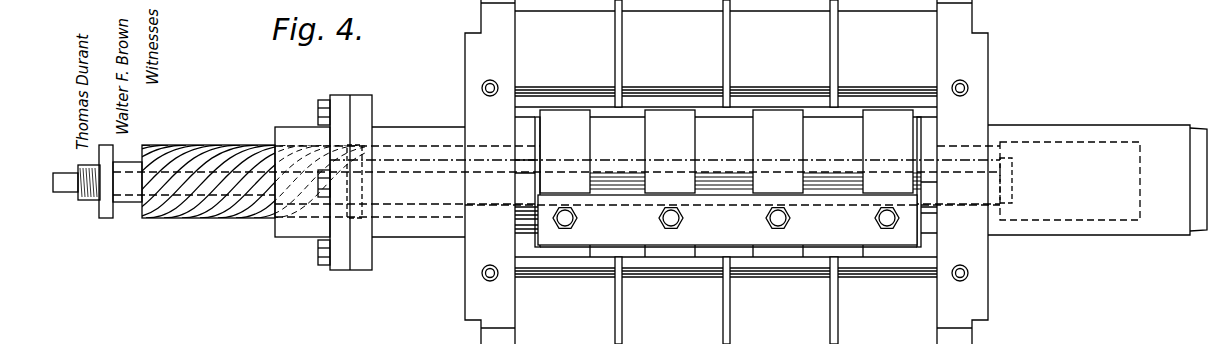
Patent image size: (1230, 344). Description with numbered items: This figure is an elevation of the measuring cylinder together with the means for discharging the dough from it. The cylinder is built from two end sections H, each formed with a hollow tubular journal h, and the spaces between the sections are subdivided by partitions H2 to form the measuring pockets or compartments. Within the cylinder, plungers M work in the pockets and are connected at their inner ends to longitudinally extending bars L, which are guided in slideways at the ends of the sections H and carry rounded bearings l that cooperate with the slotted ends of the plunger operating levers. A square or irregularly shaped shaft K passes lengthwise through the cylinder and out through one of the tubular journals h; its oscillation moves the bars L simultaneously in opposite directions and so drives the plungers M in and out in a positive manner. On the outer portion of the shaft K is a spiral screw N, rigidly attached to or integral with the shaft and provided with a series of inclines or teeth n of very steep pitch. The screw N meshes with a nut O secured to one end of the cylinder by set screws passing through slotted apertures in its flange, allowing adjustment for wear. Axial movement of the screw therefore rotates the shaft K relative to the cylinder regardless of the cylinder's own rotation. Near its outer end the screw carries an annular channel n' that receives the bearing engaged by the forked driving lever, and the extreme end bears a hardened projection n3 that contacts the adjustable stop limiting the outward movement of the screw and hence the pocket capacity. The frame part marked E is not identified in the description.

The hardened projection n3 is at (66, 190).
The annular channel n' is at (120, 198).
The spiral screw N is at (207, 204).
The inclines or teeth n is at (211, 165).
The nut O is at (294, 226).
The journal h is at (406, 127).
The end section H is at (470, 253).
The frame housing E is at (764, 134).
The plunger M is at (548, 92).
The partition H2 is at (723, 58).
The shaft K is at (607, 162).
The bar L is at (732, 220).
The rounded bearing l is at (527, 222).